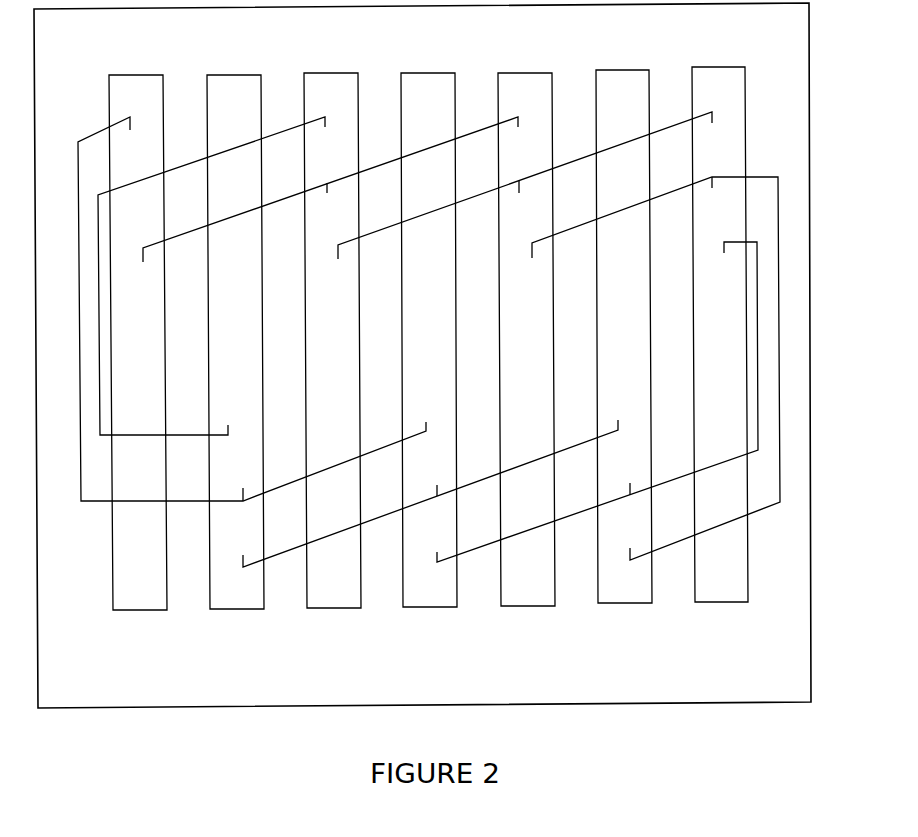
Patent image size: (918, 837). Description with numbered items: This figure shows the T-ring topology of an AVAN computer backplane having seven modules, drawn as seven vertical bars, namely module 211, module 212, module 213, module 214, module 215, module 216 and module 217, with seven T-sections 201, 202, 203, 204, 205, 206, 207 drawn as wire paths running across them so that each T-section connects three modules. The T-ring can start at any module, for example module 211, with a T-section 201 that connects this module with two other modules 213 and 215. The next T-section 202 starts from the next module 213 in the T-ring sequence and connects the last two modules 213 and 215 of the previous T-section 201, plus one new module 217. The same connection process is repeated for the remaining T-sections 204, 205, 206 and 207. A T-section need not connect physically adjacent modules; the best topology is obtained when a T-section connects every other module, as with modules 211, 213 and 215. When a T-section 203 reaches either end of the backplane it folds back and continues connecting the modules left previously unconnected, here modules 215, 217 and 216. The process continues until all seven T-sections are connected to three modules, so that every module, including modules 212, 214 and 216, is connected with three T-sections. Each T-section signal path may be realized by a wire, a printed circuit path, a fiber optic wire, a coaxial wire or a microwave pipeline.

The T-section 201 is at (188, 233).
The T-section 202 is at (381, 232).
The T-section 203 is at (575, 232).
The T-section 204 is at (757, 323).
The T-section 205 is at (576, 443).
The T-section 206 is at (383, 446).
The T-section 207 is at (188, 433).
The module 211 is at (140, 610).
The module 212 is at (237, 609).
The module 213 is at (334, 608).
The module 214 is at (431, 607).
The module 215 is at (528, 606).
The module 216 is at (626, 603).
The module 217 is at (722, 602).